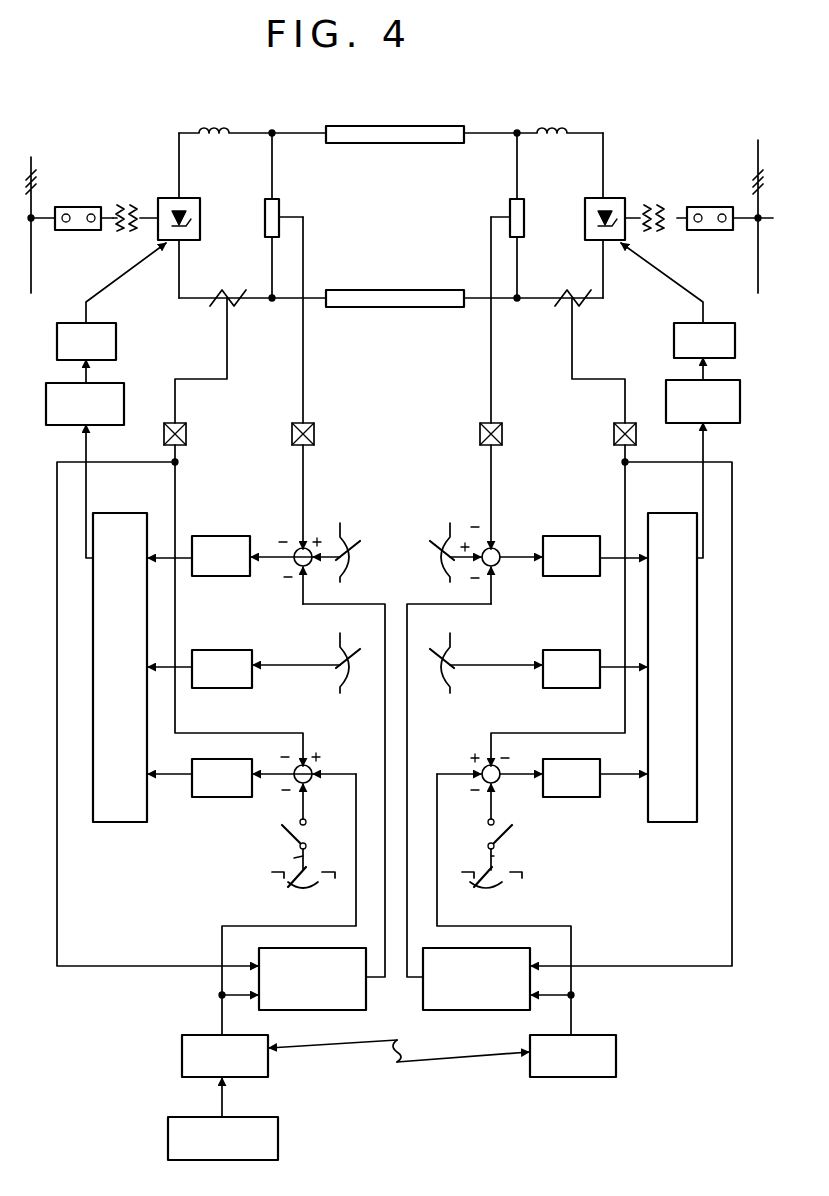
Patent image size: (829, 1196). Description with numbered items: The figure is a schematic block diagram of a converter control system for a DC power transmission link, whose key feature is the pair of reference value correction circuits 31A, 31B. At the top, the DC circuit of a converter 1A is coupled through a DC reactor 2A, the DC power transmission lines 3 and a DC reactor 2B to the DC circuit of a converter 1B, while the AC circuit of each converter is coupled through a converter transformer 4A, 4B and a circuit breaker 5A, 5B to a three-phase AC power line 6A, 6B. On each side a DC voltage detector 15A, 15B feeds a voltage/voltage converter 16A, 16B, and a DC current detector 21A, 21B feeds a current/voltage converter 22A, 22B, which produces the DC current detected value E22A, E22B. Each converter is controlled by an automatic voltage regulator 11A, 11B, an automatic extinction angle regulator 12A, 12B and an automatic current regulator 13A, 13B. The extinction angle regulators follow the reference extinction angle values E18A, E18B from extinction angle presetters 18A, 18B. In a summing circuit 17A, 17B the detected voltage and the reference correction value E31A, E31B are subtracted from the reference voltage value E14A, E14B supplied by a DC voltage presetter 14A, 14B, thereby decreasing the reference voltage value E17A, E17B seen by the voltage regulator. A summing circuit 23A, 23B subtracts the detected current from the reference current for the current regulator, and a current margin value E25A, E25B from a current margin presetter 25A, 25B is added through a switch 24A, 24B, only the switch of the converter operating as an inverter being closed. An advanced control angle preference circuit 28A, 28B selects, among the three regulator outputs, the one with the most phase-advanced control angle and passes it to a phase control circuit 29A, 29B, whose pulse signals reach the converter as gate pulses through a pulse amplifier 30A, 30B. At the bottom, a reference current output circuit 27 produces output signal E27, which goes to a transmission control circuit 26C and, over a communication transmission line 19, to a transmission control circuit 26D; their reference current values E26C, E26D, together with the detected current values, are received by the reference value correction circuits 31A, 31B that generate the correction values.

The converter 1A is at (188, 198).
The converter 1B is at (624, 198).
The DC reactor 2A is at (214, 128).
The DC reactor 2B is at (553, 128).
The DC power transmission lines 3 is at (414, 143).
The converter transformer 4A is at (124, 205).
The converter transformer 4B is at (664, 205).
The circuit breaker 5A is at (70, 207).
The circuit breaker 5B is at (712, 207).
The 3-phase AC power line 6A is at (34, 178).
The 3-phase AC power line 6B is at (755, 178).
The automatic voltage regulator 11A is at (204, 536).
The automatic voltage regulator 11B is at (577, 536).
The automatic extinction angle regulator 12A is at (205, 650).
The automatic extinction angle regulator 12B is at (564, 650).
The automatic current regulator 13A is at (213, 759).
The automatic current regulator 13B is at (573, 759).
The DC voltage presetter 14A is at (343, 530).
The DC voltage presetter 14B is at (448, 535).
The DC voltage detector 15A is at (280, 203).
The DC voltage detector 15B is at (527, 204).
The voltage/voltage converter 16A is at (311, 422).
The voltage/voltage converter 16B is at (499, 422).
The summing circuit 17A is at (306, 535).
The summing circuit 17B is at (496, 535).
The extinction angle presetter 18A is at (338, 652).
The extinction angle presetter 18B is at (452, 652).
The transmission line 19 is at (445, 1062).
The DC current detector 21A is at (230, 292).
The DC current detector 21B is at (562, 292).
The current/voltage converter 22A is at (200, 410).
The current/voltage converter 22B is at (630, 423).
The summing circuit 23A is at (310, 763).
The summing circuit 23B is at (483, 763).
The switch 24A is at (282, 832).
The switch 24B is at (510, 826).
The current margin presetter 25A is at (275, 885).
The current margin presetter 25B is at (510, 875).
The transmission control circuit 26C is at (182, 1050).
The transmission control circuit 26D is at (630, 1050).
The reference current output circuit 27 is at (168, 1131).
The advanced control angle preference circuit 28A is at (130, 822).
The advanced control angle preference circuit 28B is at (667, 822).
The phase control circuit 29A is at (137, 388).
The phase control circuit 29B is at (666, 390).
The pulse amplifier 30A is at (116, 345).
The pulse amplifier 30B is at (674, 330).
The reference value correction circuit 31A is at (366, 985).
The reference value correction circuit 31B is at (492, 1010).
The reference voltage value E14A is at (339, 576).
The reference voltage value E14B is at (453, 576).
The reference voltage value E17A is at (266, 556).
The reference voltage value E17B is at (520, 558).
The reference extinction angle value E18A is at (300, 665).
The reference extinction angle value E18B is at (528, 665).
The DC current detected value E22A is at (178, 462).
The DC current detected value E22B is at (622, 462).
The current margin value E25A is at (294, 858).
The current margin value E25B is at (494, 856).
The reference current value E26C is at (222, 995).
The reference current value E26D is at (571, 995).
The output signal E27 is at (222, 1097).
The reference correction value E31A is at (385, 920).
The reference correction value E31B is at (407, 920).